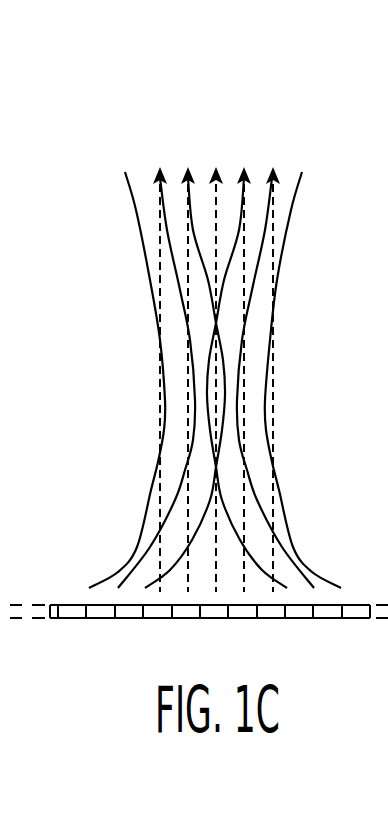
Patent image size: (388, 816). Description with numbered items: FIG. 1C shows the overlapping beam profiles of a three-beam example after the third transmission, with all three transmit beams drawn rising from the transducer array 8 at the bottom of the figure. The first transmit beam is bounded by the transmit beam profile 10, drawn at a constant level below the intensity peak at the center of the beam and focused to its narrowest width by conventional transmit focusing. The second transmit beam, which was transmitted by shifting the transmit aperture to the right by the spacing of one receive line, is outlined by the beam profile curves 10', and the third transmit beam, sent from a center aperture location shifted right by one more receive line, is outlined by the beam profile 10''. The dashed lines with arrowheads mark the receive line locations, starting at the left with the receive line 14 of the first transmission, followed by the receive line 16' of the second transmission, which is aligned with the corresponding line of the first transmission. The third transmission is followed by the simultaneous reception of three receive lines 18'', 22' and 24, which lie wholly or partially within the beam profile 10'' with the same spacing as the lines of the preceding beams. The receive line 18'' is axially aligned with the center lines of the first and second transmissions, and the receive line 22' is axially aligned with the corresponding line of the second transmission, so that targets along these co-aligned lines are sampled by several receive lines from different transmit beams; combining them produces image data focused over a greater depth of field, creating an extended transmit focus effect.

The transducer array 8 is at (355, 604).
The transmit beam profile 10 is at (211, 380).
The beam profile curves of the second transmit beam 10' is at (218, 383).
The beam profile of the third transmit beam 10'' is at (197, 383).
The receive line 14 is at (158, 178).
The receive line 16' is at (177, 345).
The receive line 18'' is at (221, 345).
The receive line 22' is at (261, 350).
The receive line 24 is at (275, 177).